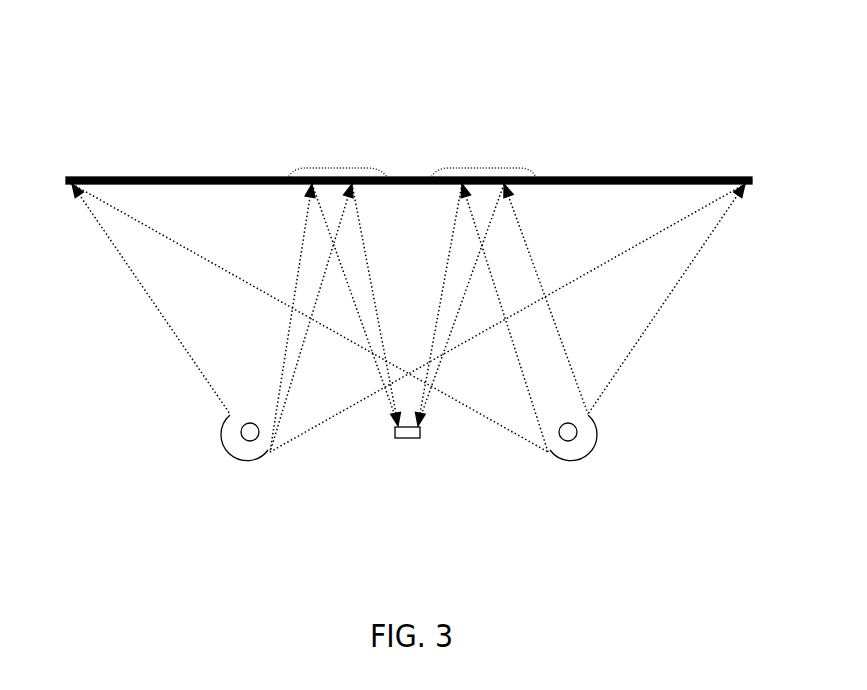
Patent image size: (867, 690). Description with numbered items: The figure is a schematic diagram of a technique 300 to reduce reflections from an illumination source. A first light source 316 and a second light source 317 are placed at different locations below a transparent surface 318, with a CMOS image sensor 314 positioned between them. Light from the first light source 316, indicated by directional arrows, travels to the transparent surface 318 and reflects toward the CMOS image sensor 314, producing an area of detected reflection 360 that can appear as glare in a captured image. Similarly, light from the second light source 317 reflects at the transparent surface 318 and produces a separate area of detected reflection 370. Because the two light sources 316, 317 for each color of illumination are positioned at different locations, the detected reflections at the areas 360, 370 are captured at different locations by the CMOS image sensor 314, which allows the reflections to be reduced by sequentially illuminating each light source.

The optical sensing system 300 is at (613, 73).
The transparent surface 318 is at (194, 178).
The area of detected reflection 360 is at (337, 170).
The area of detected reflection 370 is at (483, 170).
The first light source 316 is at (228, 413).
The second light source 317 is at (588, 427).
The CMOS image sensor 314 is at (408, 432).